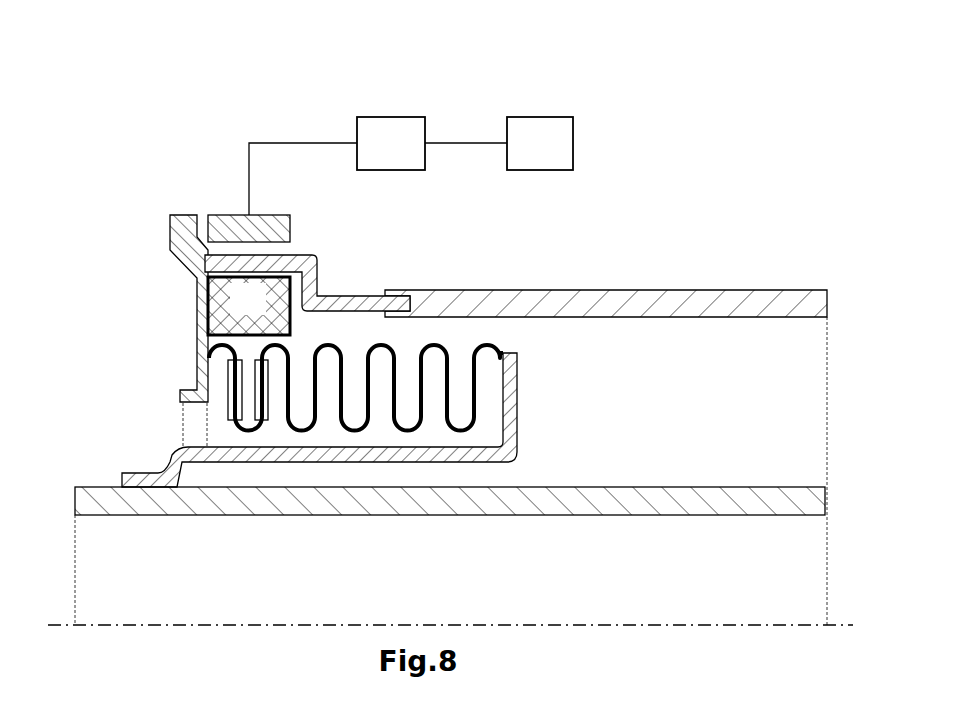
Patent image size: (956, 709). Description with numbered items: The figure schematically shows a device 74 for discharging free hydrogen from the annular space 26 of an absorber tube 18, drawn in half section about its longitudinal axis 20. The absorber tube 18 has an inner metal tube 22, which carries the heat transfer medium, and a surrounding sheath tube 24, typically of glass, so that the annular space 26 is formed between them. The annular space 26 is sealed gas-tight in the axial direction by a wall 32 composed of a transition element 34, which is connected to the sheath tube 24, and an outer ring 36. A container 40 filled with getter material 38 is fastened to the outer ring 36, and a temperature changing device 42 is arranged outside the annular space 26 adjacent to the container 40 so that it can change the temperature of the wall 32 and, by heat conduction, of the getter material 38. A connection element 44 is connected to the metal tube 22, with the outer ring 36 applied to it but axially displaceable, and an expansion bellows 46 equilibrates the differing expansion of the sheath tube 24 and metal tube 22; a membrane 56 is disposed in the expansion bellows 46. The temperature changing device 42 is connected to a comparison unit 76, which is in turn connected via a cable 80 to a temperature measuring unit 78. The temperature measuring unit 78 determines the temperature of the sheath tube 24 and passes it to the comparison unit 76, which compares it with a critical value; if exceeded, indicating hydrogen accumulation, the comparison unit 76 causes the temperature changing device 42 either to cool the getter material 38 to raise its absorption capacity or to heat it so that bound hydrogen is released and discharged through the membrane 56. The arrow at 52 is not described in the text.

The absorber tube 18 is at (674, 226).
The longitudinal axis 20 is at (117, 624).
The metal tube 22 is at (642, 493).
The sheath tube 24 is at (477, 297).
The annular space 26 is at (686, 388).
The wall 32 is at (126, 210).
The transition element 34 is at (312, 257).
The outer ring 36 is at (197, 392).
The getter material 38 is at (261, 310).
The container 40 is at (207, 268).
The temperature changing device 42 is at (258, 214).
The connection element 44 is at (510, 428).
The expansion bellows 46 is at (424, 328).
The bellows 52 is at (328, 378).
The membrane 56 is at (236, 405).
The device for discharging free hydrogen 74 is at (252, 86).
The comparison unit 76 is at (377, 155).
The temperature measuring unit 78 is at (526, 155).
The cable 80 is at (465, 143).